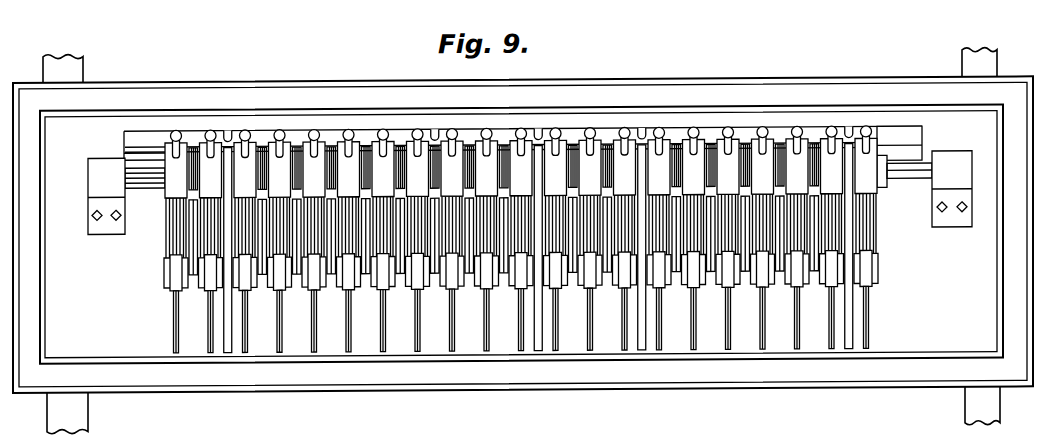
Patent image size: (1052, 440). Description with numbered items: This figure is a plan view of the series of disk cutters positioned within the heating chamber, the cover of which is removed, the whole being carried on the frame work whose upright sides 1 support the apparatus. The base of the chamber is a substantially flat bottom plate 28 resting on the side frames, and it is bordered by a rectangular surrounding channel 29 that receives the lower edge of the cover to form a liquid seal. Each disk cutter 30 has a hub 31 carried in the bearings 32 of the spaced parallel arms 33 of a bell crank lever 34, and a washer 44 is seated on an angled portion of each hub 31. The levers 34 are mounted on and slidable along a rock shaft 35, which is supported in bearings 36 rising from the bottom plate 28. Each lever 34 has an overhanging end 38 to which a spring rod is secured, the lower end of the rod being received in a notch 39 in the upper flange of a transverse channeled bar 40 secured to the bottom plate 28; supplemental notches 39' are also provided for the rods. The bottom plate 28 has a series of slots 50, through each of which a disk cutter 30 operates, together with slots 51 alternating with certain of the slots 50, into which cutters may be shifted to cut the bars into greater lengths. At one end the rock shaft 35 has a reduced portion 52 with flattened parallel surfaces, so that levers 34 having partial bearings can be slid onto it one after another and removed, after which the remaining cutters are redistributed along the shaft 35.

The upright side 1 is at (50, 410).
The bottom plate 28 is at (860, 135).
The surrounding channel 29 is at (272, 93).
The disk cutter 30 is at (176, 316).
The hub 31 is at (176, 278).
The bearing 32 is at (307, 287).
The parallel arm 33 is at (185, 247).
The bell crank lever 34 is at (178, 197).
The rock shaft 35 is at (150, 186).
The bearing 36 is at (96, 165).
The overhanging end 38 is at (440, 148).
The notch 39 is at (521, 97).
The supplemental notch 39' is at (538, 98).
The transverse channeled bar 40 is at (363, 135).
The washer 44 is at (184, 291).
The slot 50 is at (280, 346).
The slot 51 is at (230, 350).
The reduced portion 52 is at (906, 185).